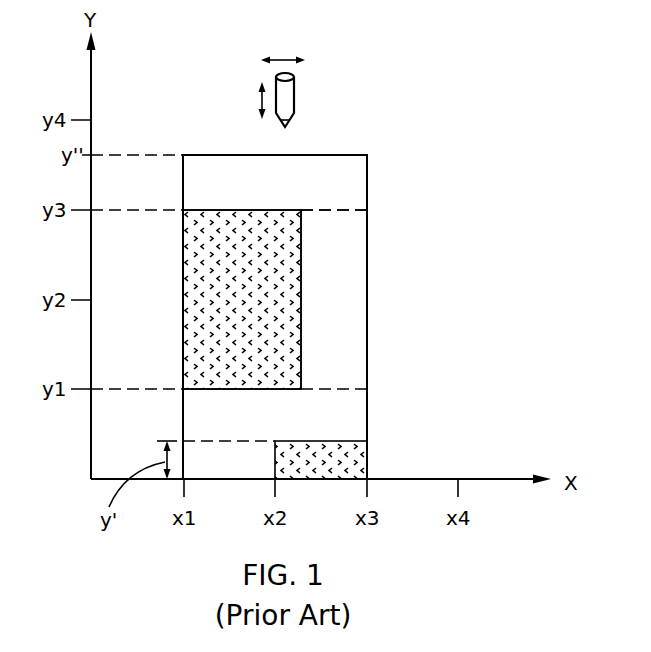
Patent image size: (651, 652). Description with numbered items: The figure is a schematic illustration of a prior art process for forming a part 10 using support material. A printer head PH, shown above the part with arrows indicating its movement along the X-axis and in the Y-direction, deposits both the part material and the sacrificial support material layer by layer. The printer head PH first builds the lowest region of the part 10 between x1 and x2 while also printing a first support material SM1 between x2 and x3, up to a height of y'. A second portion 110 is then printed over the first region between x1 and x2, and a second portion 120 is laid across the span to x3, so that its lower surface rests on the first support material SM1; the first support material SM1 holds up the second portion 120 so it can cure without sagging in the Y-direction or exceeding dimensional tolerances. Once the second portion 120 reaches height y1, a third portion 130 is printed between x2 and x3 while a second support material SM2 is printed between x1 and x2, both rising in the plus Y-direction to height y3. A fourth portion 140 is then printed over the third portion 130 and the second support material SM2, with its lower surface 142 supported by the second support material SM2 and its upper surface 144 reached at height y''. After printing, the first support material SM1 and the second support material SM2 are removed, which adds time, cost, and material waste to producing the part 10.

The part 10 is at (481, 64).
The second portion 110 is at (238, 450).
The second portion 120 is at (352, 410).
The third portion 130 is at (352, 280).
The fourth portion 140 is at (345, 168).
The lower surface 142 is at (274, 209).
The upper surface 144 is at (212, 155).
The printer head PH is at (314, 87).
The first support material SM1 is at (357, 463).
The second support material SM2 is at (200, 288).